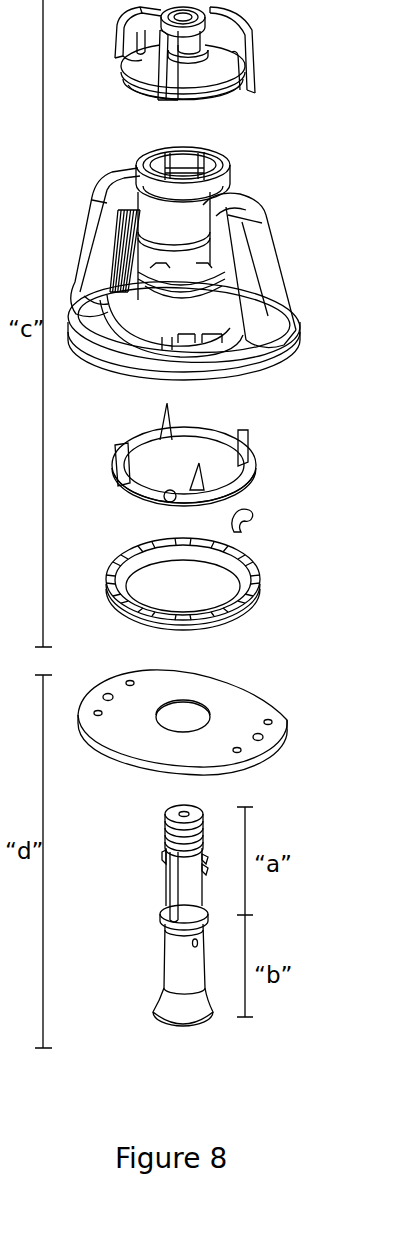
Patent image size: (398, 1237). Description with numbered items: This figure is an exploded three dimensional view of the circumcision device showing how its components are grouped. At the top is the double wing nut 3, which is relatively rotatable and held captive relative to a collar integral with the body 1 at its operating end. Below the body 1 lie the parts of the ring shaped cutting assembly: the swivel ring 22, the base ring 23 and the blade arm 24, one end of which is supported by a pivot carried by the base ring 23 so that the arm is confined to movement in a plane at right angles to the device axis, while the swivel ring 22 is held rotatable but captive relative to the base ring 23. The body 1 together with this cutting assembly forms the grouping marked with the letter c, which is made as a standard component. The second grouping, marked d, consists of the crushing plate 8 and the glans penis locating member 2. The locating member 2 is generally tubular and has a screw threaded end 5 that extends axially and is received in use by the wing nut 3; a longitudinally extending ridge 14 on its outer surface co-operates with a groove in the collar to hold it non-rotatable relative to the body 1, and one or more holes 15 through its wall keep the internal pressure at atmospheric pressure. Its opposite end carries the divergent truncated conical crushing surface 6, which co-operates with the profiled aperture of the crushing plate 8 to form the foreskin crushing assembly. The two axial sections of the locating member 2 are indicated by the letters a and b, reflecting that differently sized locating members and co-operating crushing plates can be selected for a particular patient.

The body 1 is at (243, 295).
The glans penis locating member 2 is at (149, 936).
The double wing nut 3 is at (205, 36).
The screw threaded end 5 is at (168, 832).
The crushing surface 6 is at (175, 1011).
The crushing plate 8 is at (242, 716).
The longitudinally extending ridge 14 is at (170, 887).
The holes 15 is at (191, 943).
The swivel ring 22 is at (255, 468).
The base ring 23 is at (262, 596).
The blade arm 24 is at (254, 523).